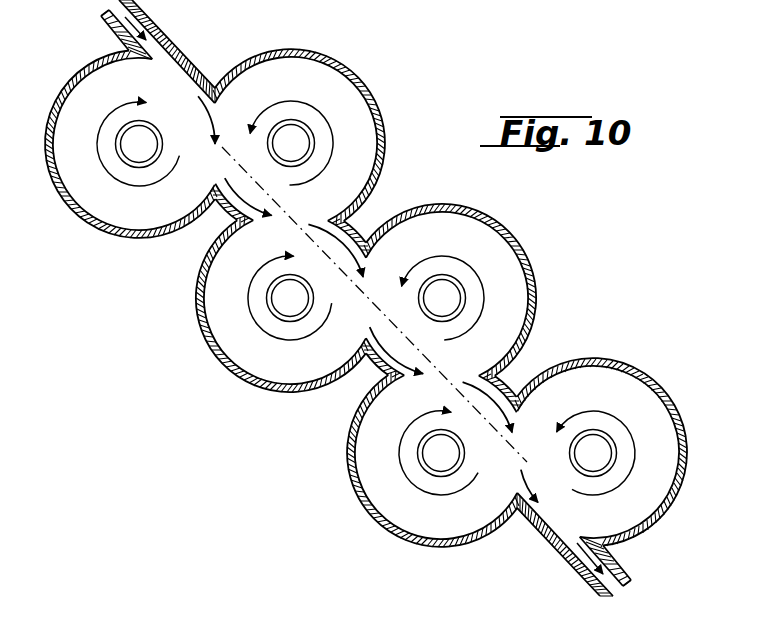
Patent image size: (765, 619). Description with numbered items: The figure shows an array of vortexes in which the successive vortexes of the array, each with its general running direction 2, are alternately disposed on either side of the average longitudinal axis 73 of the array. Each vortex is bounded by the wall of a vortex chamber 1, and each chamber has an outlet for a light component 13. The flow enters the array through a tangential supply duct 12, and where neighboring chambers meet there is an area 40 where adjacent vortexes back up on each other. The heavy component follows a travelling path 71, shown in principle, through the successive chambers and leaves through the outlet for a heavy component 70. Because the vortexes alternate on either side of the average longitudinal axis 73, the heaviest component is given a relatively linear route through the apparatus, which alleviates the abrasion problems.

The wall of a vortex chamber 1 is at (358, 447).
The general running direction of a vortex 2 is at (97, 133).
The tangential supply duct 12 is at (111, 30).
The outlet for a light component 13 is at (146, 132).
The area where adjacent vortexes back up on each other 40 is at (301, 214).
The outlet for a heavy component 70 is at (617, 567).
The travelling path of a heavy component in principle 71 is at (508, 420).
The average longitudinal axis for an array of vortexes 73 is at (423, 359).